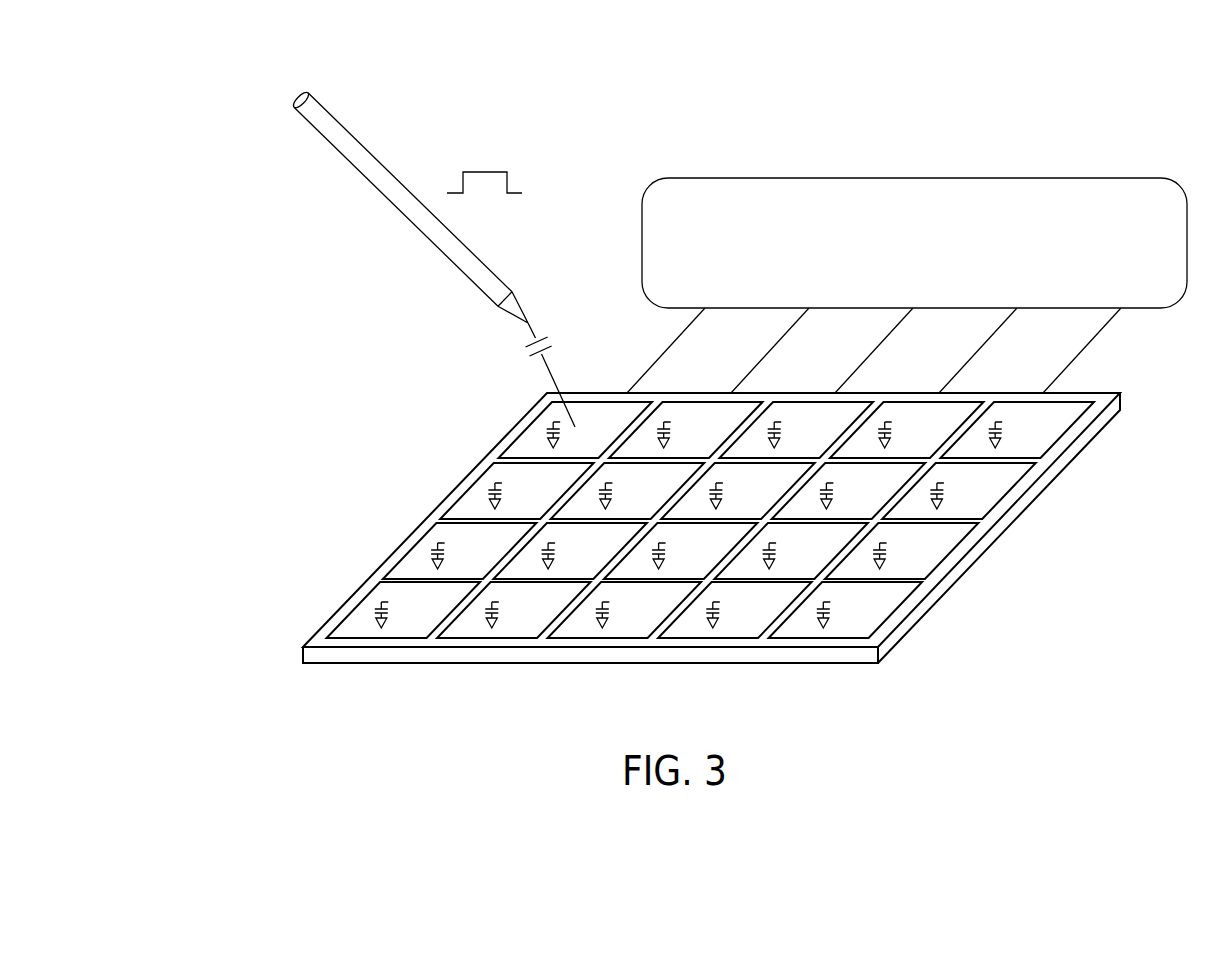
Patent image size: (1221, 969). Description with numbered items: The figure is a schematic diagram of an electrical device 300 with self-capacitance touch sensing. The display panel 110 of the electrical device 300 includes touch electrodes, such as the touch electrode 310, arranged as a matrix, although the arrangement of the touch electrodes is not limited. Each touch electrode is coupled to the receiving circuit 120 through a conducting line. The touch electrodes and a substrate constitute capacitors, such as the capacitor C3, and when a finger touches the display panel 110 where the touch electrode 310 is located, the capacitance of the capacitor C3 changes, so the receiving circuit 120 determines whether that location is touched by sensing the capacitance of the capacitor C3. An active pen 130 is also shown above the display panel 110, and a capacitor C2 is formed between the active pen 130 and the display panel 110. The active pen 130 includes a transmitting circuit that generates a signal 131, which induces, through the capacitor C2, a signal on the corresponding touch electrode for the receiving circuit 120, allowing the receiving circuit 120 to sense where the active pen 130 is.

The electrical device 300 is at (660, 347).
The display panel 110 is at (725, 496).
The receiving circuit 120 is at (938, 275).
The active pen 130 is at (337, 117).
The signal 131 is at (482, 170).
The touch electrode 310 is at (508, 394).
The capacitor C2 is at (561, 373).
The capacitor C3 is at (545, 421).